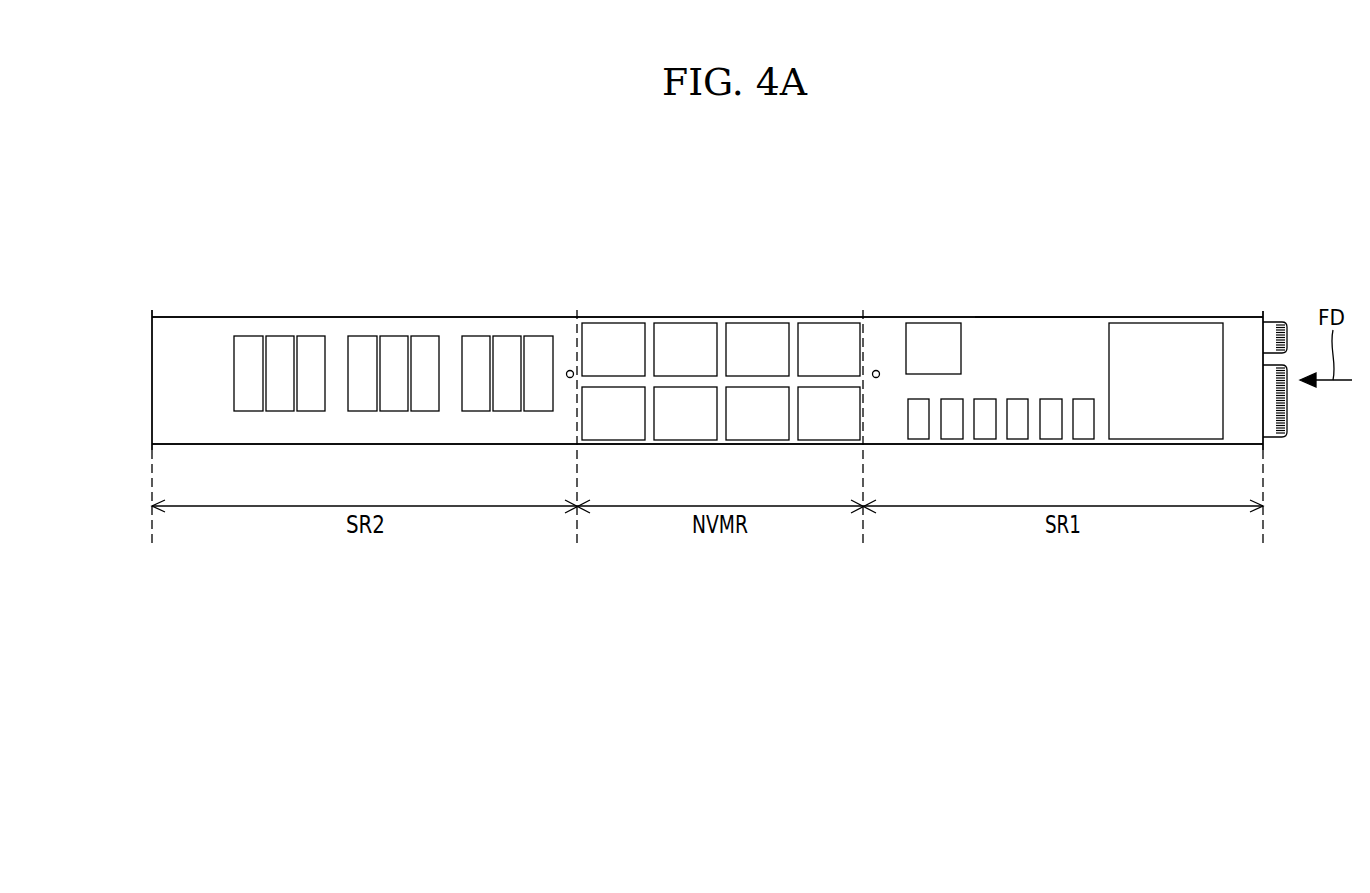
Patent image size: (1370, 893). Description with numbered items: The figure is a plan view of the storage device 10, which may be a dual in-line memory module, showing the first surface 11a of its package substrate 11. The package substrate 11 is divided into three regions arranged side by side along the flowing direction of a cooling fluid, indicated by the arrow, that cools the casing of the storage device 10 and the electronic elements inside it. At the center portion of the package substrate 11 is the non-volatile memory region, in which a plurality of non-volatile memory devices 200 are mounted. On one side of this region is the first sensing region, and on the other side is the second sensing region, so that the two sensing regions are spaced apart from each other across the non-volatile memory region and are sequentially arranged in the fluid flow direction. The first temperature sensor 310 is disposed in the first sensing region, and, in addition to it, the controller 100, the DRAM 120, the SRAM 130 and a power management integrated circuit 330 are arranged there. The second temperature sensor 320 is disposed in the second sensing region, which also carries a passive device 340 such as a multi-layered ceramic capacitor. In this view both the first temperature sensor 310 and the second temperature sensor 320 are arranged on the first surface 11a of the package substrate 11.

The storage device 10 is at (206, 250).
The package substrate 11 is at (1018, 317).
The first surface 11a is at (1063, 333).
The controller 100 is at (1166, 323).
The DRAM 120 is at (1028, 452).
The SRAM 130 is at (1094, 452).
The non-volatile memory devices 200 is at (757, 323).
The first temperature sensor 310 is at (876, 370).
The second temperature sensor 320 is at (570, 370).
The power management integrated circuit 330 is at (933, 323).
The passive device 340 is at (248, 336).